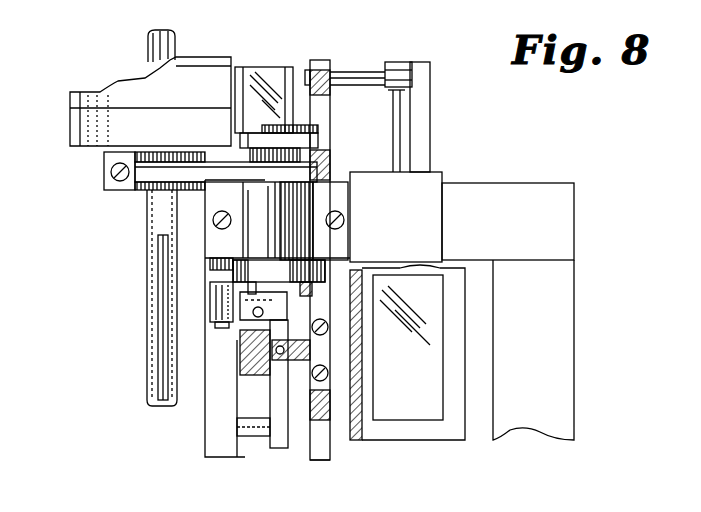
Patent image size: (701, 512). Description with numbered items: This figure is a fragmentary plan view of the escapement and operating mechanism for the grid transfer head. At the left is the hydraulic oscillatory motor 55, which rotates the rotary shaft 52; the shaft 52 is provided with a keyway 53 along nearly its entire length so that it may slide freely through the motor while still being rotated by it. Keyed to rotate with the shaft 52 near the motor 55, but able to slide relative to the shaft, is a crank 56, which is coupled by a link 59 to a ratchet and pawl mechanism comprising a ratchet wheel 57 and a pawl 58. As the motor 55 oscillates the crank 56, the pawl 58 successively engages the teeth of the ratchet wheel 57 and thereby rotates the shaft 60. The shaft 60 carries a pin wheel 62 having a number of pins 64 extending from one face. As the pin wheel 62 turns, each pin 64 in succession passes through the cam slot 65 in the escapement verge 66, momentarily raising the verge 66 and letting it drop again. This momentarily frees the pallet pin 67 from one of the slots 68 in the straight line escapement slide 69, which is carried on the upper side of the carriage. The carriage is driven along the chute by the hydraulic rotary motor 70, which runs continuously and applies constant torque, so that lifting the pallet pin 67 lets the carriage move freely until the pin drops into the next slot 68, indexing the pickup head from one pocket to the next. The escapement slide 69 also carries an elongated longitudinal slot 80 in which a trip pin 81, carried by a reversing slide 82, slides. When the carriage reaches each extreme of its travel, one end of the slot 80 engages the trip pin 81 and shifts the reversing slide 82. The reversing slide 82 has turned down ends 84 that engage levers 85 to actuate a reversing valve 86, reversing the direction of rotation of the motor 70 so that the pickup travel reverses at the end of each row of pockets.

The rotary shaft 52 is at (150, 314).
The keyway 53 is at (160, 272).
The hydraulic oscillatory motor 55 is at (85, 118).
The crank 56 is at (122, 190).
The ratchet wheel 57 is at (310, 132).
The pawl 58 is at (318, 145).
The link 59 is at (215, 170).
The shaft 60 is at (290, 258).
The pin wheel 62 is at (250, 258).
The pin 64 is at (312, 294).
The cam slot 65 is at (245, 292).
The escapement verge 66 is at (214, 330).
The pallet pin 67 is at (256, 314).
The slots 68 is at (240, 432).
The escapement slide 69 is at (252, 458).
The hydraulic rotary motor 70 is at (410, 415).
The elongated longitudinal slot 80 is at (278, 448).
The trip pin 81 is at (278, 358).
The reversing slide 82 is at (325, 452).
The turned down ends 84 is at (320, 60).
The levers 85 is at (357, 72).
The reversing valve 86 is at (418, 190).